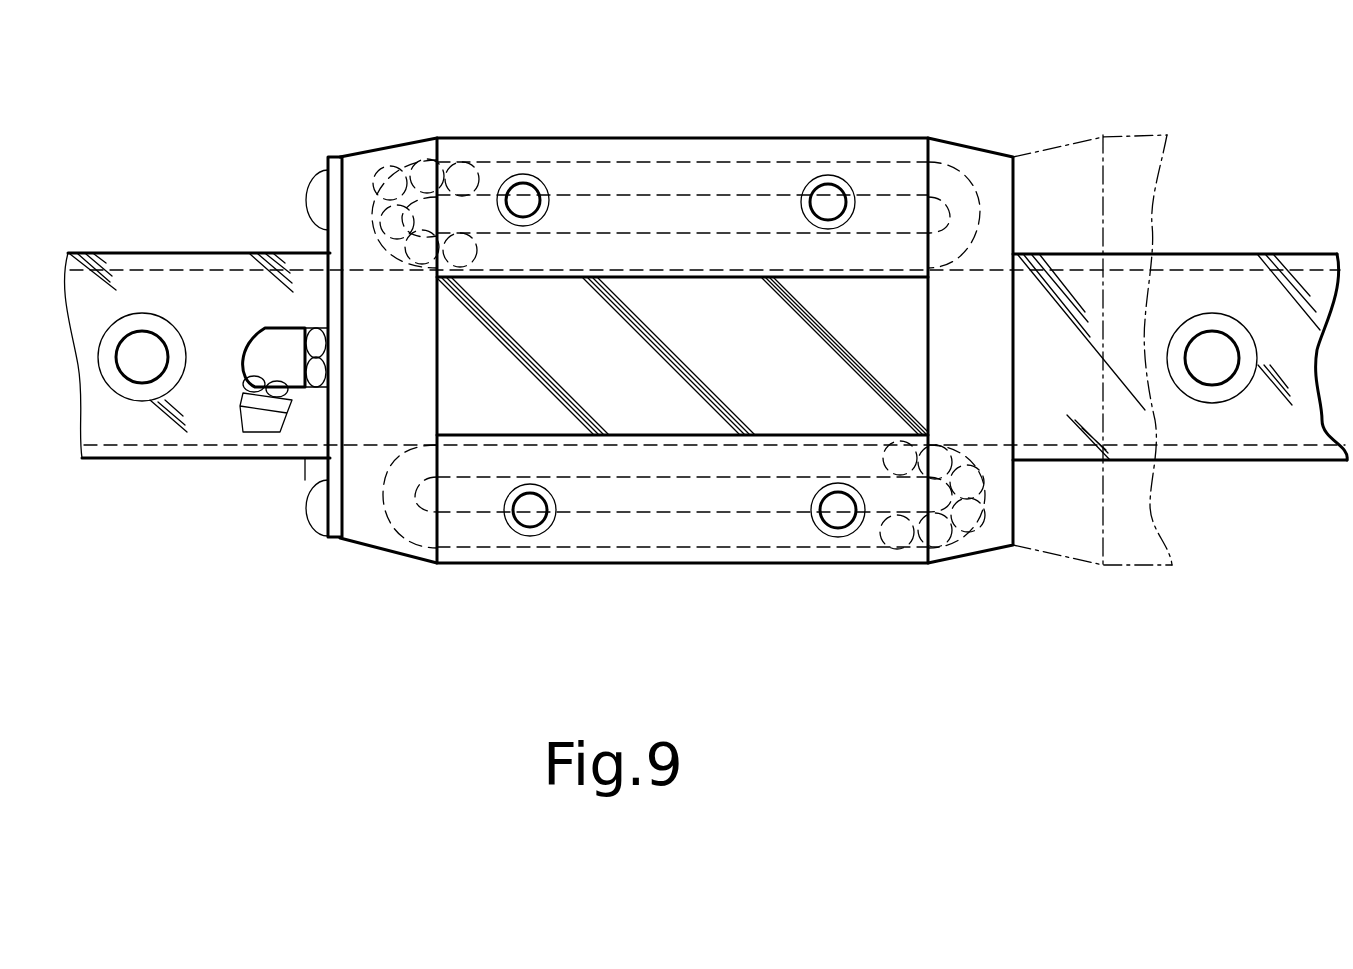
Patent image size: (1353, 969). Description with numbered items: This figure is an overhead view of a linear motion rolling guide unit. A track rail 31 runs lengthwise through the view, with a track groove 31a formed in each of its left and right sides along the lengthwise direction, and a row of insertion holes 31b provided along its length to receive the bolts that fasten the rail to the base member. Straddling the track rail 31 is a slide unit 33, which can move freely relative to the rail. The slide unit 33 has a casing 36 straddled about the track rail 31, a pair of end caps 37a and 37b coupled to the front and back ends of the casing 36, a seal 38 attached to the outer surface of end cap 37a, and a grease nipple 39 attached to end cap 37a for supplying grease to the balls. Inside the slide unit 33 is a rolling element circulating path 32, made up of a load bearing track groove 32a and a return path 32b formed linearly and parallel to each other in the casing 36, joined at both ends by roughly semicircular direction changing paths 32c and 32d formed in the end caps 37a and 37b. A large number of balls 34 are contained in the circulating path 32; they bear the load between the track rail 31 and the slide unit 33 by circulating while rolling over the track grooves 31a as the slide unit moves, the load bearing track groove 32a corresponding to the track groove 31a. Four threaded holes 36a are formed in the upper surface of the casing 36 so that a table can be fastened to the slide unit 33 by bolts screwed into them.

The track rail 31 is at (1200, 460).
The track groove 31a is at (123, 268).
The insertion holes 31b is at (140, 350).
The rolling element circulating path 32 is at (655, 150).
The load bearing track groove 32a is at (620, 238).
The return path 32b is at (700, 178).
The direction changing path 32c is at (390, 172).
The direction changing path 32d is at (960, 200).
The slide unit 33 is at (921, 126).
The balls 34 is at (458, 165).
The casing 36 is at (772, 152).
The threaded holes 36a is at (522, 188).
The end cap 37a is at (355, 160).
The end cap 37b is at (1005, 160).
The seal 38 is at (312, 160).
The grease nipple 39 is at (258, 352).